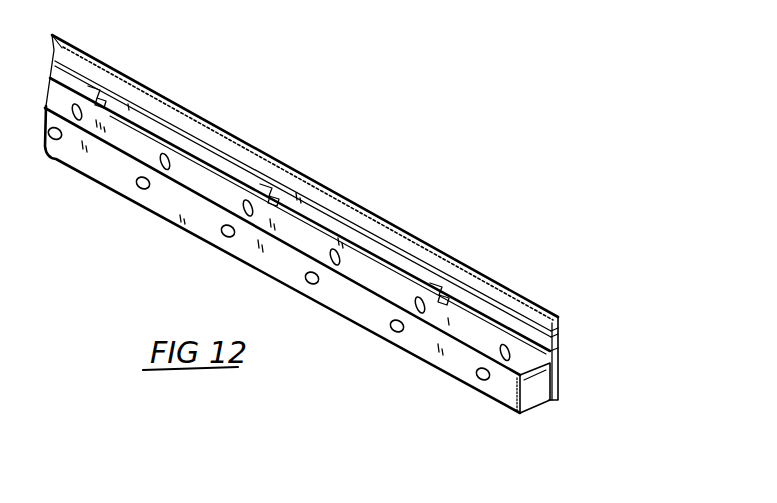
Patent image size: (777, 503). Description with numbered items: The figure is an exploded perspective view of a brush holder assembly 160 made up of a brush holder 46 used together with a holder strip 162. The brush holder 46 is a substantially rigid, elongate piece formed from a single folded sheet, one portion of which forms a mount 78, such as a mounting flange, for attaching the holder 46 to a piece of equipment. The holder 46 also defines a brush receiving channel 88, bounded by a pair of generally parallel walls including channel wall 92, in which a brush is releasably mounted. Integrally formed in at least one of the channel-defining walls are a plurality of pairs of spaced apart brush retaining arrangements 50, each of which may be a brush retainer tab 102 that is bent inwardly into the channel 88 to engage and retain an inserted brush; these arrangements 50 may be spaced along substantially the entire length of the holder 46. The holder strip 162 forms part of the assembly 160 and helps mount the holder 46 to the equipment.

The brush retaining arrangement 50 is at (130, 60).
The channel wall 92 is at (149, 118).
The brush retainer tab 102 is at (97, 97).
The brush holder assembly 160 is at (188, 245).
The holder strip 162 is at (102, 182).
The brush holder 46 is at (576, 315).
The mount 78 is at (562, 402).
The brush receiving channel 88 is at (537, 384).